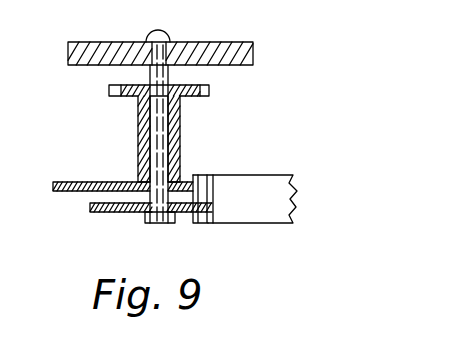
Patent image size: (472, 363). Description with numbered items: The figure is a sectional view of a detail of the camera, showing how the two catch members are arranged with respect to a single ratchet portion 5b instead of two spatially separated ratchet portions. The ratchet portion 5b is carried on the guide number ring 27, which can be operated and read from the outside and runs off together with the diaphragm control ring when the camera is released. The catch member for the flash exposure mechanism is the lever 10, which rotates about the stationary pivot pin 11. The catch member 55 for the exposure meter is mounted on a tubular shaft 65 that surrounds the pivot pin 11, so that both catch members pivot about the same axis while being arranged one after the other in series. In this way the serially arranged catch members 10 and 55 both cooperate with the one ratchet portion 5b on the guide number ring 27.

The pivot pin 11 is at (162, 128).
The tubular shaft 65 is at (177, 153).
The catch member 55 is at (78, 182).
The catch member 10 is at (104, 214).
The guide number ring 27 is at (277, 198).
The ratchet portion 5b is at (201, 223).